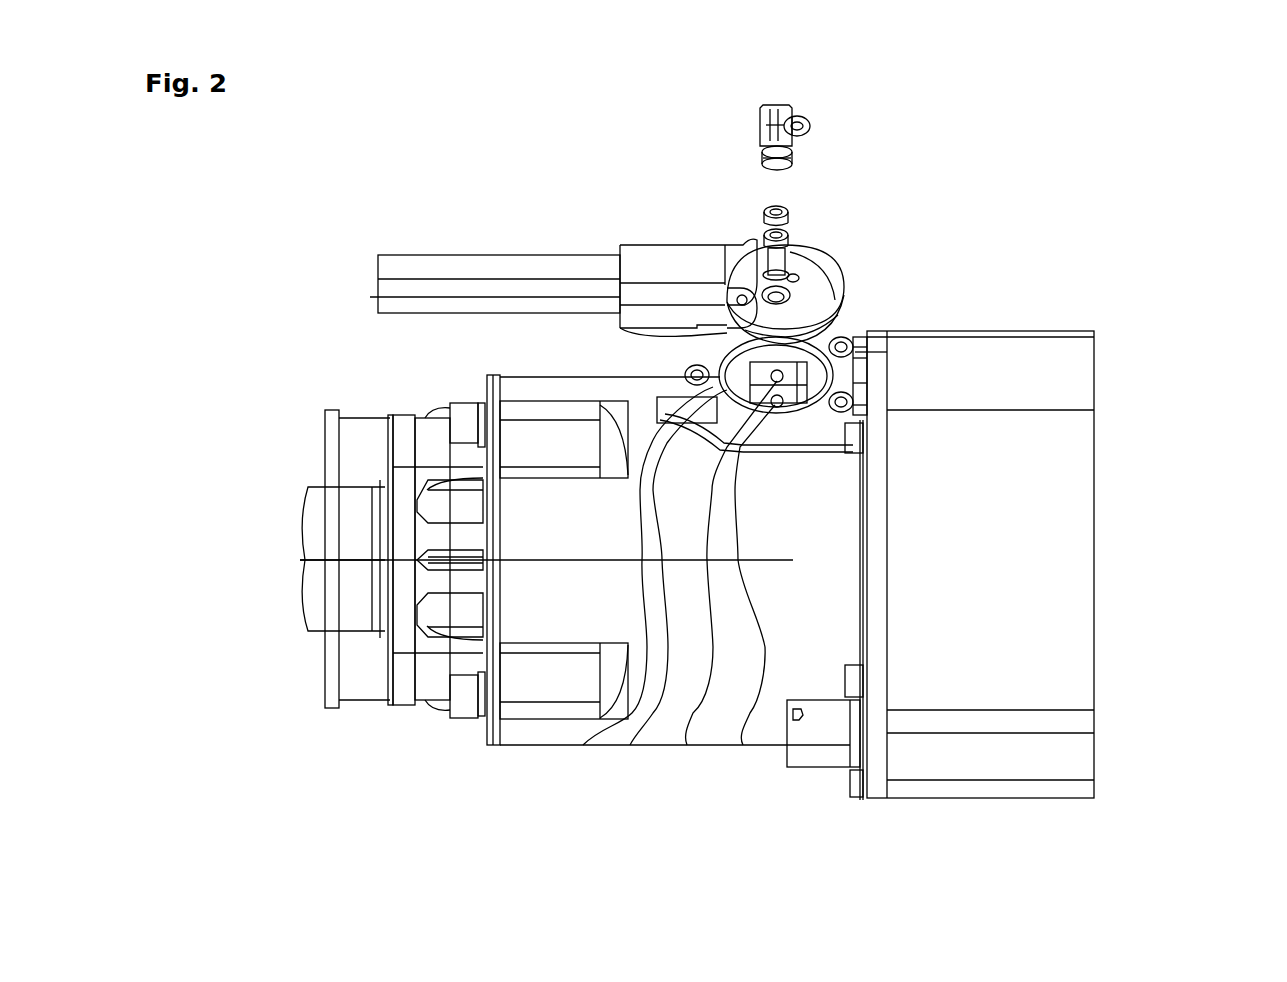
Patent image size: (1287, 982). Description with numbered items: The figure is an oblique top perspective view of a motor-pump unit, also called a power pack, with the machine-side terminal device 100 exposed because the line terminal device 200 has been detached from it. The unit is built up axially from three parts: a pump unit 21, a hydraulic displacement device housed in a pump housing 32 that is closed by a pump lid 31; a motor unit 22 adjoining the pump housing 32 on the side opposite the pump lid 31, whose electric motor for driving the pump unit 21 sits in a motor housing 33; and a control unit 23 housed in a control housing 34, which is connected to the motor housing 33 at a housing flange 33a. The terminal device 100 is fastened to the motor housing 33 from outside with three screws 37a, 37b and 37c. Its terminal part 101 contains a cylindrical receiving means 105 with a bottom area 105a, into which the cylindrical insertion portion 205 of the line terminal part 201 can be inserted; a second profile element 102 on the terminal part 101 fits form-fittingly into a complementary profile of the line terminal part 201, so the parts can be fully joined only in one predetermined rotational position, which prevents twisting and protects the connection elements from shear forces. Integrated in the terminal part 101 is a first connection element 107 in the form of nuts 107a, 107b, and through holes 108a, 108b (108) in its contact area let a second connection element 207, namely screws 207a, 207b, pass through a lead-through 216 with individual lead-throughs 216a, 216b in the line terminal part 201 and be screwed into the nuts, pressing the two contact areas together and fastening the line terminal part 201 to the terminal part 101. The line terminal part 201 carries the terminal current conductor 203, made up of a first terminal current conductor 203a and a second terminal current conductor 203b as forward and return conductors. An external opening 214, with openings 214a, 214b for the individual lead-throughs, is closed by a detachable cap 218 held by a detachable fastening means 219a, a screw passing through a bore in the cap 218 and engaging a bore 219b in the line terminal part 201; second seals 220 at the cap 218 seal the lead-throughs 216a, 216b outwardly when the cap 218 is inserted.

The pump unit 21 is at (478, 815).
The motor unit 22 is at (865, 815).
The control unit 23 is at (1096, 815).
The pump lid 31 is at (405, 416).
The pump housing 32 is at (430, 418).
The motor housing 33 is at (535, 376).
The housing flange 33a is at (882, 348).
The control housing 34 is at (1080, 478).
The screw 37a is at (690, 373).
The screw 37b is at (853, 402).
The screw 37c is at (853, 347).
The terminal device 100 is at (790, 468).
The terminal part 101 is at (808, 435).
The second profile element 102 is at (680, 390).
The receiving means 105 is at (630, 745).
The bottom area 105a is at (583, 745).
The first connection element 107 is at (768, 790).
The first connection element 107a is at (743, 745).
The first connection element 107b is at (687, 745).
The through holes 108 is at (1205, 353).
The connection part 108a is at (855, 358).
The connection part 108b is at (805, 381).
The line terminal device 200 is at (680, 238).
The line terminal part 201 is at (711, 262).
The terminal current conductor 203 is at (245, 260).
The first terminal current conductor 203a is at (383, 262).
The second terminal current conductor 203b is at (383, 289).
The insertion portion 205 is at (712, 335).
The second connection element 207 is at (1055, 152).
The second connection element 207a is at (788, 208).
The second connection element 207b is at (788, 230).
The external opening 214 is at (905, 232).
The external opening 214a is at (786, 262).
The external opening 214b is at (778, 297).
The lead-through 216 is at (1055, 215).
The lead-through 216a is at (792, 258).
The lead-through 216b is at (790, 335).
The cap 218 is at (746, 117).
The fastening means 219a is at (806, 136).
The clip holder 219b is at (738, 292).
The second seals 220 is at (760, 157).